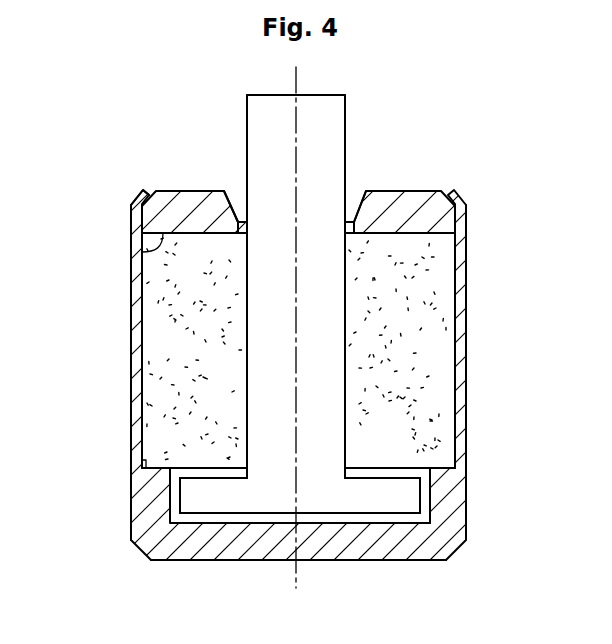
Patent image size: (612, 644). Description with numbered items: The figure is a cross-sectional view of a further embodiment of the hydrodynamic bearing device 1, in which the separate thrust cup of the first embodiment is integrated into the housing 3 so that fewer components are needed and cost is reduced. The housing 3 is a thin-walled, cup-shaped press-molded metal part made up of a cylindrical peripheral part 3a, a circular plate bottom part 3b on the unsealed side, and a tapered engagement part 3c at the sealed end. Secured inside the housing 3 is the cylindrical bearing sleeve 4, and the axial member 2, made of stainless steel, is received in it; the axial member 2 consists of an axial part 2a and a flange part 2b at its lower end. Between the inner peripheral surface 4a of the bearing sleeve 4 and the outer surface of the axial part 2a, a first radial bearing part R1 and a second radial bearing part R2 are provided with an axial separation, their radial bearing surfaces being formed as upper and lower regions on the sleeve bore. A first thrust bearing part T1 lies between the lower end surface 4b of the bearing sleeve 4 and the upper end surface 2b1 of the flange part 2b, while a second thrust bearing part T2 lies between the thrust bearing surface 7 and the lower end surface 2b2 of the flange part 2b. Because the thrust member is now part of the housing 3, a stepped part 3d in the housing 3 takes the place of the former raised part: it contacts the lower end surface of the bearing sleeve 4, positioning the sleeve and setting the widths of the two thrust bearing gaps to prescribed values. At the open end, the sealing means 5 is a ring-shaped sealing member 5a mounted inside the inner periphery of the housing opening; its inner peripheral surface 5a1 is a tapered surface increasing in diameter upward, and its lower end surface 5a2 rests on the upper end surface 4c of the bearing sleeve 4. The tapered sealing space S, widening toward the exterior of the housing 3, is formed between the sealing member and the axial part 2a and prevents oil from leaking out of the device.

The hydrodynamic bearing device 1 is at (478, 147).
The axial member 2 is at (327, 88).
The axial part 2a is at (257, 118).
The flange part 2b is at (268, 505).
The upper end surface of the flange part 2b1 is at (190, 478).
The lower end surface of the flange part 2b2 is at (213, 515).
The housing 3 is at (466, 342).
The cylindrical peripheral part 3a is at (132, 335).
The bottom part 3b is at (328, 553).
The tapered engagement part 3c is at (138, 198).
The stepped part 3d is at (143, 457).
The bearing sleeve 4 is at (423, 307).
The inner peripheral surface of the bearing sleeve 4a is at (248, 257).
The lower end surface of the bearing sleeve 4b is at (375, 470).
The upper end surface of the bearing sleeve 4c is at (430, 224).
The sealing means 5 is at (418, 189).
The sealing member 5a is at (392, 197).
The inner peripheral surface of the sealing member 5a1 is at (237, 193).
The lower end surface of the sealing member 5a2 is at (143, 251).
The thrust bearing surface 7 is at (352, 512).
The first radial bearing part R1 is at (245, 297).
The second radial bearing part R2 is at (245, 418).
The sealing space S is at (353, 200).
The first thrust bearing part T1 is at (405, 467).
The second thrust bearing part T2 is at (409, 520).